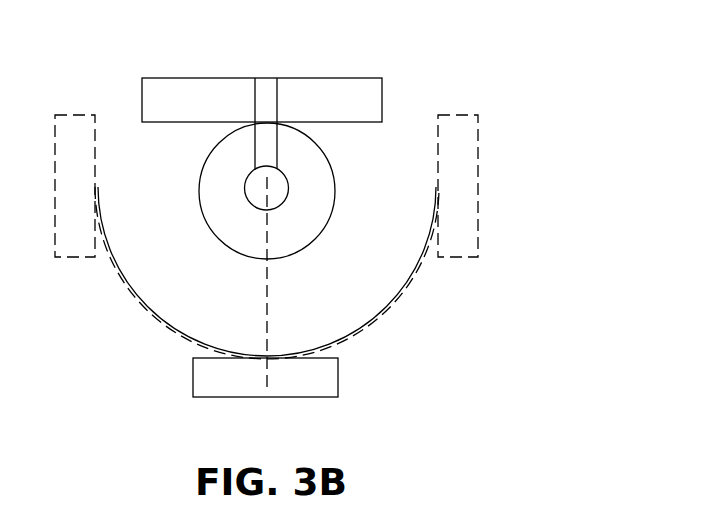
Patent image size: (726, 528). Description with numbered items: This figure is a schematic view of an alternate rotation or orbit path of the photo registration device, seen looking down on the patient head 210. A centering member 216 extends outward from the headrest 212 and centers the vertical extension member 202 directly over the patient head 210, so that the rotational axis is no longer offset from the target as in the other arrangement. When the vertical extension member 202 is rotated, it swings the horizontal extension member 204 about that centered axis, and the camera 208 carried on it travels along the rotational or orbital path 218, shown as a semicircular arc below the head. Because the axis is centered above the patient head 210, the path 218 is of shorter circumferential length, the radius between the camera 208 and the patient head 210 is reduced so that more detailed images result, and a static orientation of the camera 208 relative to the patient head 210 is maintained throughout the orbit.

The vertical extension member 202 is at (288, 190).
The horizontal extension member 204 is at (267, 298).
The camera 208 is at (338, 382).
The patient head 210 is at (333, 172).
The headrest 212 is at (382, 95).
The centering member 216 is at (278, 100).
The rotational or orbital path 218 is at (398, 293).